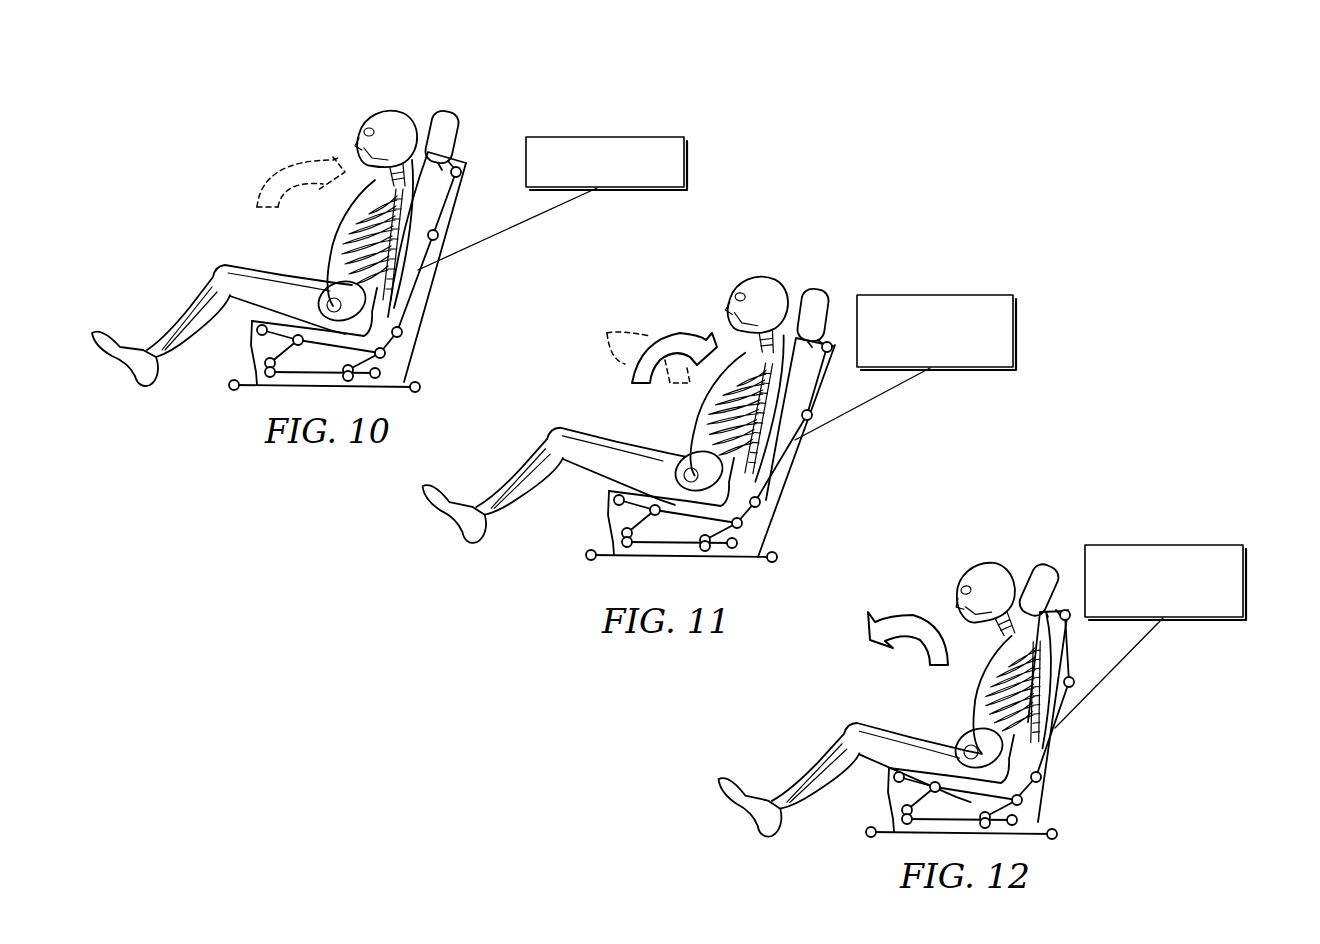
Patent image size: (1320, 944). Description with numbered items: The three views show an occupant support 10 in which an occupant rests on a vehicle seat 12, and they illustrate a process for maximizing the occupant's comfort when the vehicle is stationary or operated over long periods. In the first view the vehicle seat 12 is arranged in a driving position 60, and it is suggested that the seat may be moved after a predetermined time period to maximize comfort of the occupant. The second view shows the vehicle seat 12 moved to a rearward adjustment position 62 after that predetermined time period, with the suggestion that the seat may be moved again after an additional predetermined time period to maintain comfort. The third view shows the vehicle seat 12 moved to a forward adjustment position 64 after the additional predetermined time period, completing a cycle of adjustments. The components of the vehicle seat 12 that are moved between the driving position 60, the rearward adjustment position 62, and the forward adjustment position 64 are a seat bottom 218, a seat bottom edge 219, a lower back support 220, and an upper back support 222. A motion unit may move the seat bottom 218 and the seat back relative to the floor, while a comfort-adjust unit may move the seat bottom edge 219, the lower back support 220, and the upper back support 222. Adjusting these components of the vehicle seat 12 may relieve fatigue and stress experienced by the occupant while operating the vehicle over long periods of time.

In FIG. 10, the occupant support 10 is at (430, 96).
In FIG. 11, the occupant support 10 is at (851, 218).
In FIG. 12, the occupant support 10 is at (1083, 470).
In FIG. 10, the vehicle seat 12 is at (496, 152).
In FIG. 11, the vehicle seat 12 is at (838, 303).
In FIG. 12, the vehicle seat 12 is at (1051, 560).
In FIG. 10, the driving position 60 is at (638, 136).
In FIG. 11, the rearward adjustment position 62 is at (963, 293).
In FIG. 12, the forward adjustment position 64 is at (1193, 544).
In FIG. 10, the seat bottom 218 is at (366, 359).
In FIG. 11, the seat bottom 218 is at (724, 524).
In FIG. 12, the seat bottom 218 is at (1005, 802).
In FIG. 10, the seat bottom edge 219 is at (247, 337).
In FIG. 11, the seat bottom edge 219 is at (603, 503).
In FIG. 12, the seat bottom edge 219 is at (885, 782).
In FIG. 10, the lower back support 220 is at (434, 293).
In FIG. 12, the lower back support 220 is at (1072, 723).
In FIG. 10, the upper back support 222 is at (462, 204).
In FIG. 11, the upper back support 222 is at (833, 381).
In FIG. 12, the upper back support 222 is at (1081, 638).